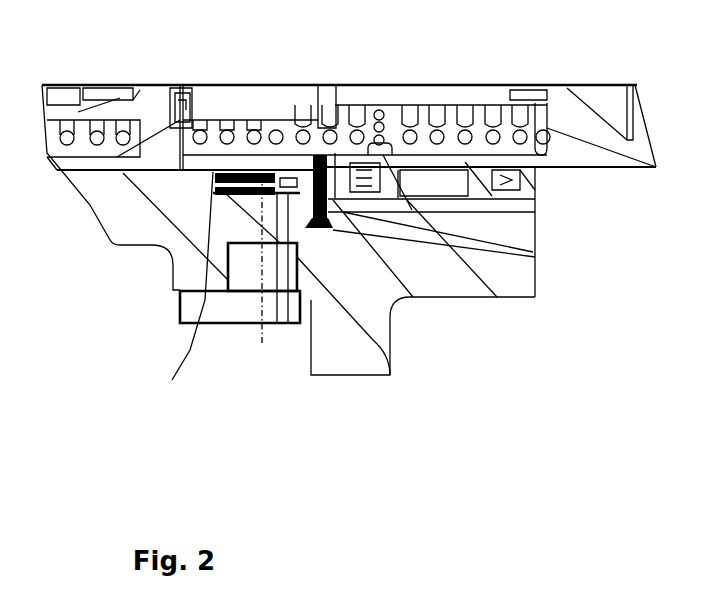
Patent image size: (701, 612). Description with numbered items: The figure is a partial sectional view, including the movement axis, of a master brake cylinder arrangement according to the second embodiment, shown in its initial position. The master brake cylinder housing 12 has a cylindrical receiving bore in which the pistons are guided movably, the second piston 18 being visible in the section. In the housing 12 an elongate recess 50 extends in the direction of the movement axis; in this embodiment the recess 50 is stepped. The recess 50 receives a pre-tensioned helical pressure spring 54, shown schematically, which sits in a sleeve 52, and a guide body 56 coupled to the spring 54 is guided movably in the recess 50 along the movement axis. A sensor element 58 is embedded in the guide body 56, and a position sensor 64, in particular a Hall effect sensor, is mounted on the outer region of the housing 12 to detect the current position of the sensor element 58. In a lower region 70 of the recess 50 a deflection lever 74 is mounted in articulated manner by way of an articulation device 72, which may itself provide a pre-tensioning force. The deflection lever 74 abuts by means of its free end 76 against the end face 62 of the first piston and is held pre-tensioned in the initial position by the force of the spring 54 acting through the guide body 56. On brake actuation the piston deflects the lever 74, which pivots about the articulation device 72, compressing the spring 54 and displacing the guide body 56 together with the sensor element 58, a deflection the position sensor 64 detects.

The master brake cylinder housing 12 is at (130, 232).
The second piston 18 is at (587, 130).
The recess 50 is at (187, 350).
The sleeve 52 is at (243, 170).
The helical pressure spring 54 is at (222, 170).
The guide body 56 is at (263, 345).
The sensor element 58 is at (290, 323).
The end face 62 is at (377, 105).
The position sensor 64 is at (225, 310).
The lower region 70 is at (500, 220).
The articulation device 72 is at (500, 230).
The deflection lever 74 is at (500, 207).
The free end 76 is at (316, 150).